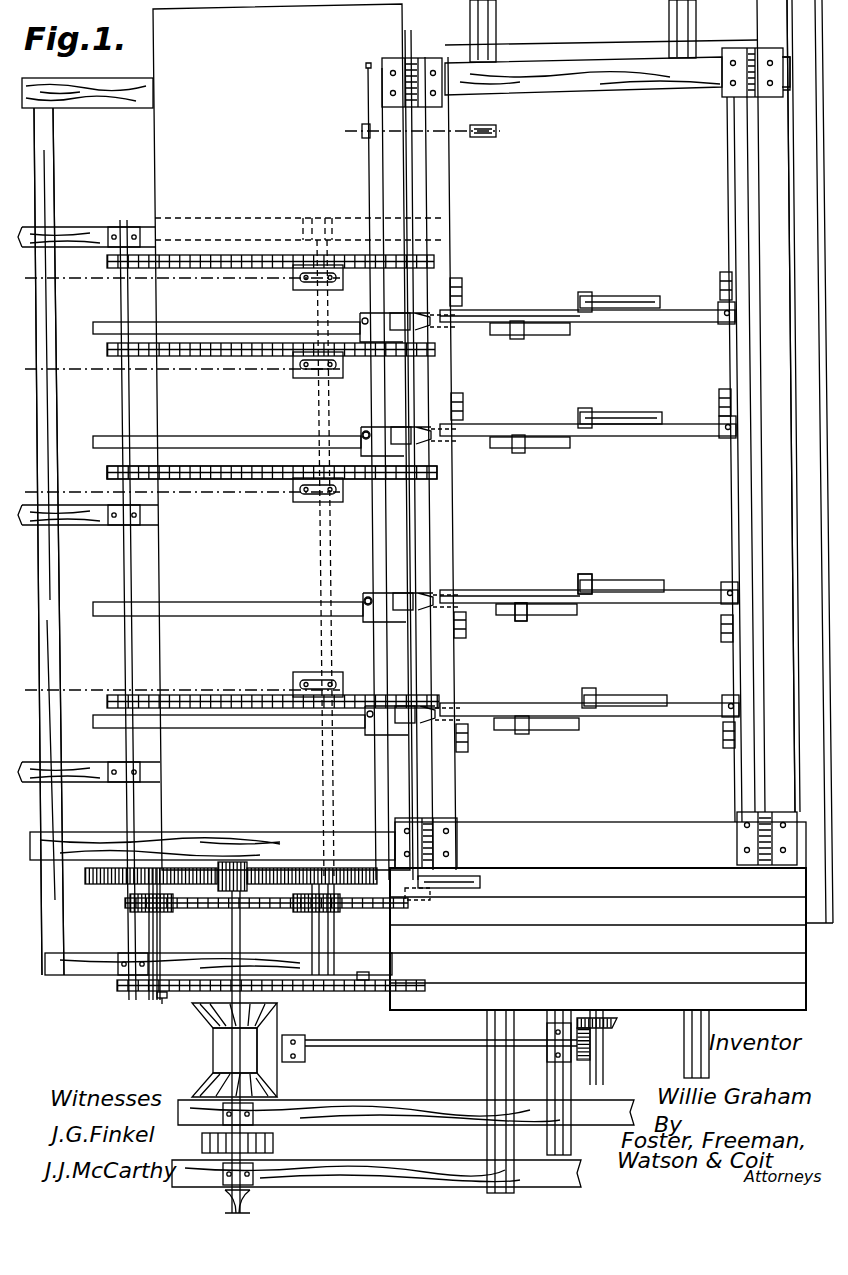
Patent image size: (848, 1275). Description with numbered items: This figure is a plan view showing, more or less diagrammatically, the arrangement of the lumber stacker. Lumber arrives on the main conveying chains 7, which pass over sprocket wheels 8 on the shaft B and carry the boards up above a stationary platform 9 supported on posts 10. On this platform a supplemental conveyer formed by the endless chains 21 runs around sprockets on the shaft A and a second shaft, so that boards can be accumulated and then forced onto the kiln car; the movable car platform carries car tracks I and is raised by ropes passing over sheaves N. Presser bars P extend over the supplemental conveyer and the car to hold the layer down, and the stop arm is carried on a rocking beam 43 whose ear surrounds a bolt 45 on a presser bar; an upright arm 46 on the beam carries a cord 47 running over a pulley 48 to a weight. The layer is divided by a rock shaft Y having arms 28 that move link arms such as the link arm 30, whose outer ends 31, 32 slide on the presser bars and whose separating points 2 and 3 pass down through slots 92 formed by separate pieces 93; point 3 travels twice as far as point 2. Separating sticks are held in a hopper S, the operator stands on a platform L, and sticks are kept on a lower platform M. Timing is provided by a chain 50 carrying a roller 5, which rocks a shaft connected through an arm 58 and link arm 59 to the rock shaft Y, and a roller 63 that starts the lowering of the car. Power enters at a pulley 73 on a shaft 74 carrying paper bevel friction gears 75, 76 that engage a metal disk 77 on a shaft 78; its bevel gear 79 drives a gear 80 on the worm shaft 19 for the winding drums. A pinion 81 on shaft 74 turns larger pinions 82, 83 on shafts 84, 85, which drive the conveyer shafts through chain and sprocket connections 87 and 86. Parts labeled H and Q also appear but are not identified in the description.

The separating point 2 is at (538, 340).
The separating point 3 is at (612, 322).
The roller 5 is at (162, 1003).
The conveying chains 7 is at (95, 282).
The sprocket wheels 8 is at (300, 283).
The stationary platform 9 is at (85, 764).
The posts 10 is at (62, 816).
The shaft 19 is at (604, 1045).
The endless chains 21 is at (220, 482).
The arms 28 is at (384, 596).
The link arm 30 is at (525, 312).
The outer end of link arm 31 is at (518, 618).
The outer end of link arm 32 is at (588, 582).
The beam 43 is at (375, 548).
The bolt 45 is at (364, 432).
The upright arm 46 is at (362, 131).
The cord 47 is at (372, 131).
The pulley 48 is at (496, 136).
The chain 50 is at (128, 993).
The arm 58 is at (472, 876).
The link arm 59 is at (425, 900).
The roller 63 is at (362, 982).
The pulley 73 is at (250, 1155).
The shaft 74 is at (272, 1140).
The bevel friction gear 75 is at (210, 1085).
The bevel friction gear 76 is at (214, 1030).
The bevel friction disk 77 is at (278, 1030).
The shaft 78 is at (385, 1048).
The bevel toothed gear 79 is at (590, 1056).
The bevel gear 80 is at (619, 1026).
The pinion 81 is at (243, 862).
The pinion 82 is at (345, 868).
The pinion 83 is at (180, 868).
The shaft 84 is at (312, 910).
The shaft 85 is at (161, 935).
The chain and sprocket connection 86 is at (263, 910).
The chain and sprocket connection 87 is at (378, 908).
The slots 92 is at (655, 302).
The separate pieces 93 is at (600, 300).
The shaft A is at (124, 658).
The shaft B is at (320, 568).
The post H is at (472, 1075).
The car tracks I is at (709, 1021).
The platform L is at (598, 939).
The lower platform M is at (762, 522).
The sheaves N is at (410, 62).
The presser bars P is at (664, 322).
The bracket Q is at (398, 622).
The hopper S is at (462, 290).
The rock shaft Y is at (414, 203).